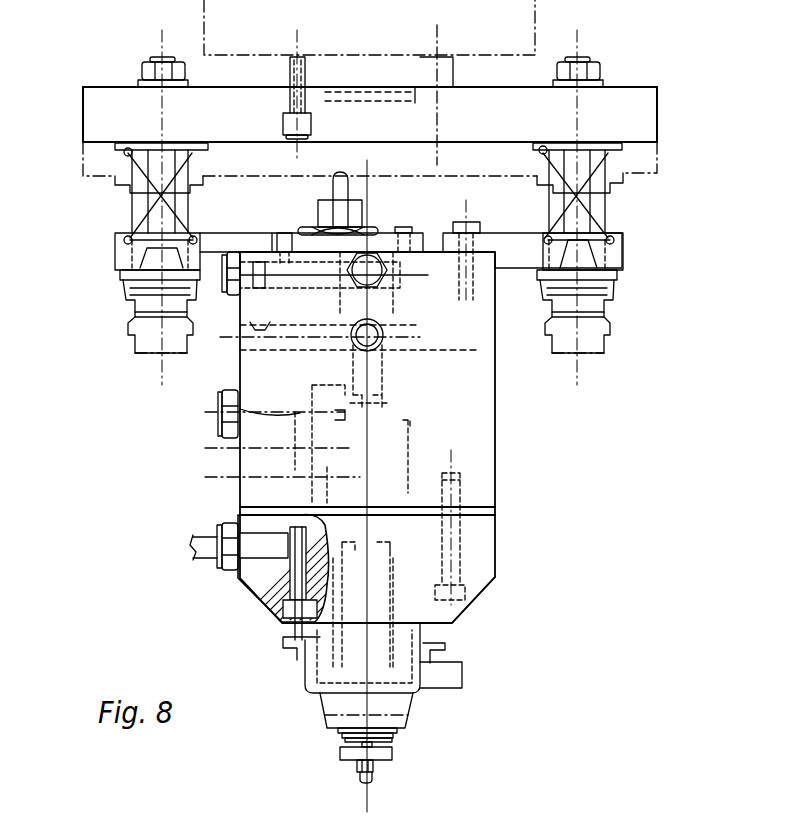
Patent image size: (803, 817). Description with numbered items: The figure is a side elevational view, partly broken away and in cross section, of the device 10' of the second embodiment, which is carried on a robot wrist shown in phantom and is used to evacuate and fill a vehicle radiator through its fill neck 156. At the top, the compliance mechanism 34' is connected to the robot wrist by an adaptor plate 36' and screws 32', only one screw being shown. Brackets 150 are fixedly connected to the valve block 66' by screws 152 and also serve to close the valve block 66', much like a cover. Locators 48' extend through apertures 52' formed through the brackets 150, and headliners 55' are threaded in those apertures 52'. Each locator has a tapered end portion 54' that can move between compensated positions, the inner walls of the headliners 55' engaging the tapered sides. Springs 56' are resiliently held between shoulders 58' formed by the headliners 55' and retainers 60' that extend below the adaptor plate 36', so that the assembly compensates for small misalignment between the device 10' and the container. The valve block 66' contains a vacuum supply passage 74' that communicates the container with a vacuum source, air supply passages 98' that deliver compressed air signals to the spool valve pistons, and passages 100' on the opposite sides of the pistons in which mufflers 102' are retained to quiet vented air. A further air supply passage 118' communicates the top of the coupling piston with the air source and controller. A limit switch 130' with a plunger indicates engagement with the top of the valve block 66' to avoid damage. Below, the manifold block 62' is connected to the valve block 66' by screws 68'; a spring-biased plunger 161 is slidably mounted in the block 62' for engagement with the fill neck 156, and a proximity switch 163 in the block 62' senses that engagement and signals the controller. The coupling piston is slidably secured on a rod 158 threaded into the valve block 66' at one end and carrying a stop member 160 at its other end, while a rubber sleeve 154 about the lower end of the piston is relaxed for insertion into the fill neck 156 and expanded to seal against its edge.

The compliance mechanism 34' is at (403, 192).
The adaptor plate 36' is at (383, 60).
The screw 32' is at (273, 101).
The retainer 60' is at (374, 161).
The locator 48' is at (397, 194).
The spring 56' is at (345, 222).
The bracket 150 is at (115, 248).
The aperture 52' is at (611, 251).
The shoulder 58' is at (411, 306).
The headliner 55' is at (367, 285).
The tapered end portion 54' is at (367, 316).
The device 10' is at (420, 191).
The valve block 66' is at (401, 437).
The muffler 102' is at (316, 321).
The air supply passage 98' is at (350, 349).
The limit switch 130' is at (360, 242).
The passage 100' is at (275, 232).
The screw 152 is at (467, 221).
The vacuum supply passage 74' is at (282, 426).
The air supply passage 118' is at (336, 501).
The spring-biased plunger 161 is at (298, 627).
The proximity switch 163 is at (223, 558).
The manifold 62' is at (501, 600).
The screw 68' is at (481, 553).
The fill neck 156 is at (302, 672).
The rubber sleeve 154 is at (402, 722).
The rod 158 is at (383, 742).
The stop member 160 is at (392, 755).